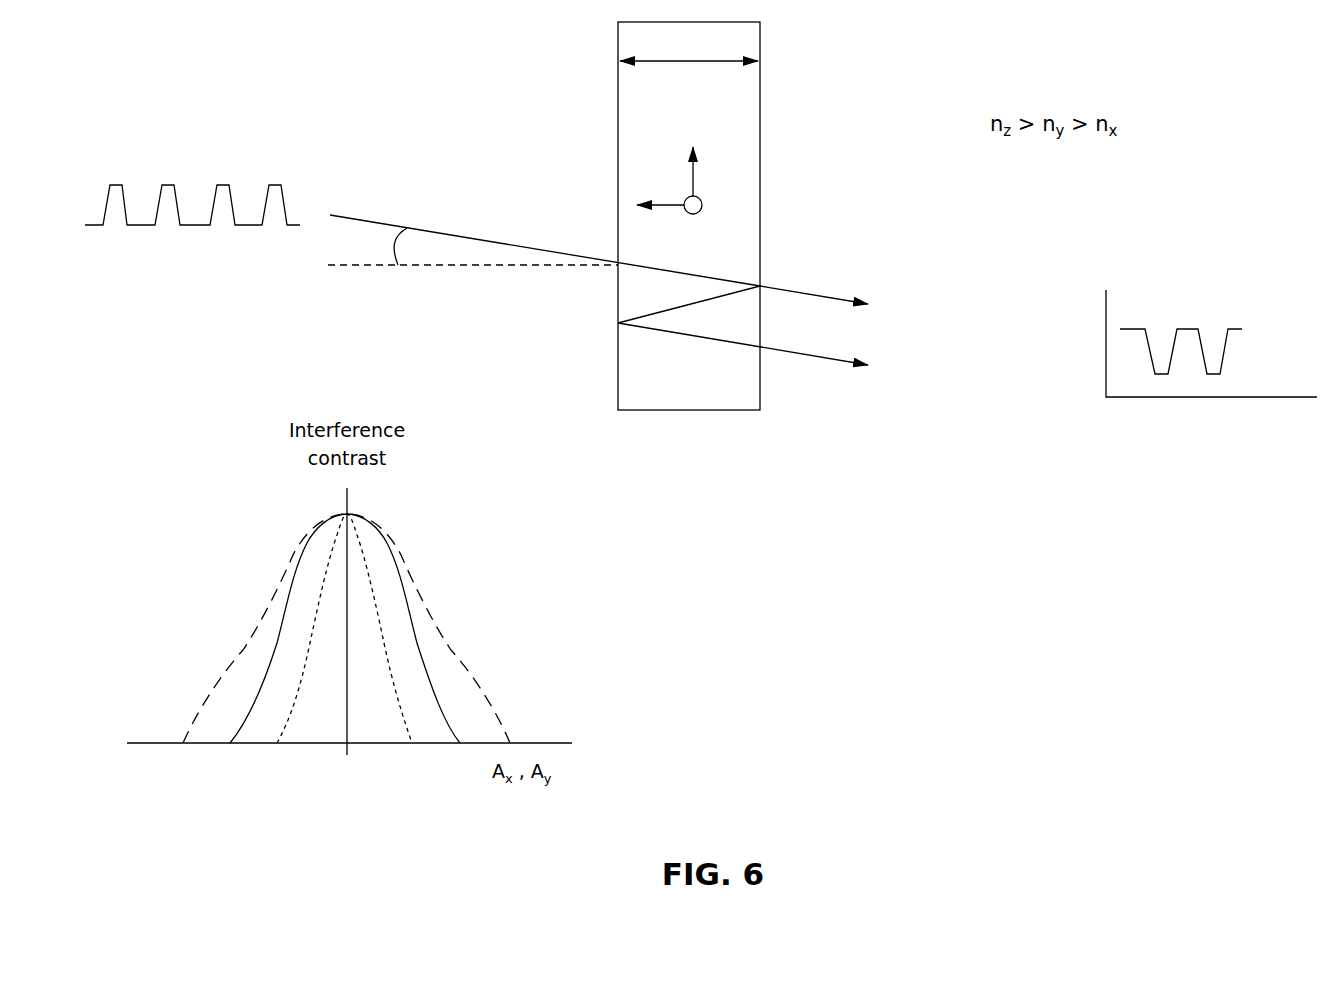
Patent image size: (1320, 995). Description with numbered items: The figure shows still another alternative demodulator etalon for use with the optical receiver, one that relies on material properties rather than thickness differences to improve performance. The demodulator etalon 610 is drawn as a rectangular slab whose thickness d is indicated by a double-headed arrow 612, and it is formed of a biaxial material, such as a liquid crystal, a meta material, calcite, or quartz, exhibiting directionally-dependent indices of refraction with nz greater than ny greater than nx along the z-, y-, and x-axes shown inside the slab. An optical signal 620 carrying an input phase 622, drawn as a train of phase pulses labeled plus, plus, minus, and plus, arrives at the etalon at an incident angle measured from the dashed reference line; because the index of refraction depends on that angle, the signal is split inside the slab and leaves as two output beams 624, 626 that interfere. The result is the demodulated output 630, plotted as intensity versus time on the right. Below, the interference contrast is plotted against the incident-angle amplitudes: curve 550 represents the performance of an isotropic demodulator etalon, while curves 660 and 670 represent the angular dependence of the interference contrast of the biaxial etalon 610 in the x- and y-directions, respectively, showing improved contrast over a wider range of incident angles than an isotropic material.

The demodulator etalon 610 is at (762, 90).
The double-headed arrow 612 is at (675, 62).
The optical signal 620 is at (472, 232).
The input phase 622 is at (287, 193).
The first output beam 624 is at (793, 290).
The second output beam 626 is at (783, 352).
The demodulated output 630 is at (1242, 329).
The curve 550 is at (383, 648).
The curve 660 is at (392, 562).
The curve 670 is at (273, 587).